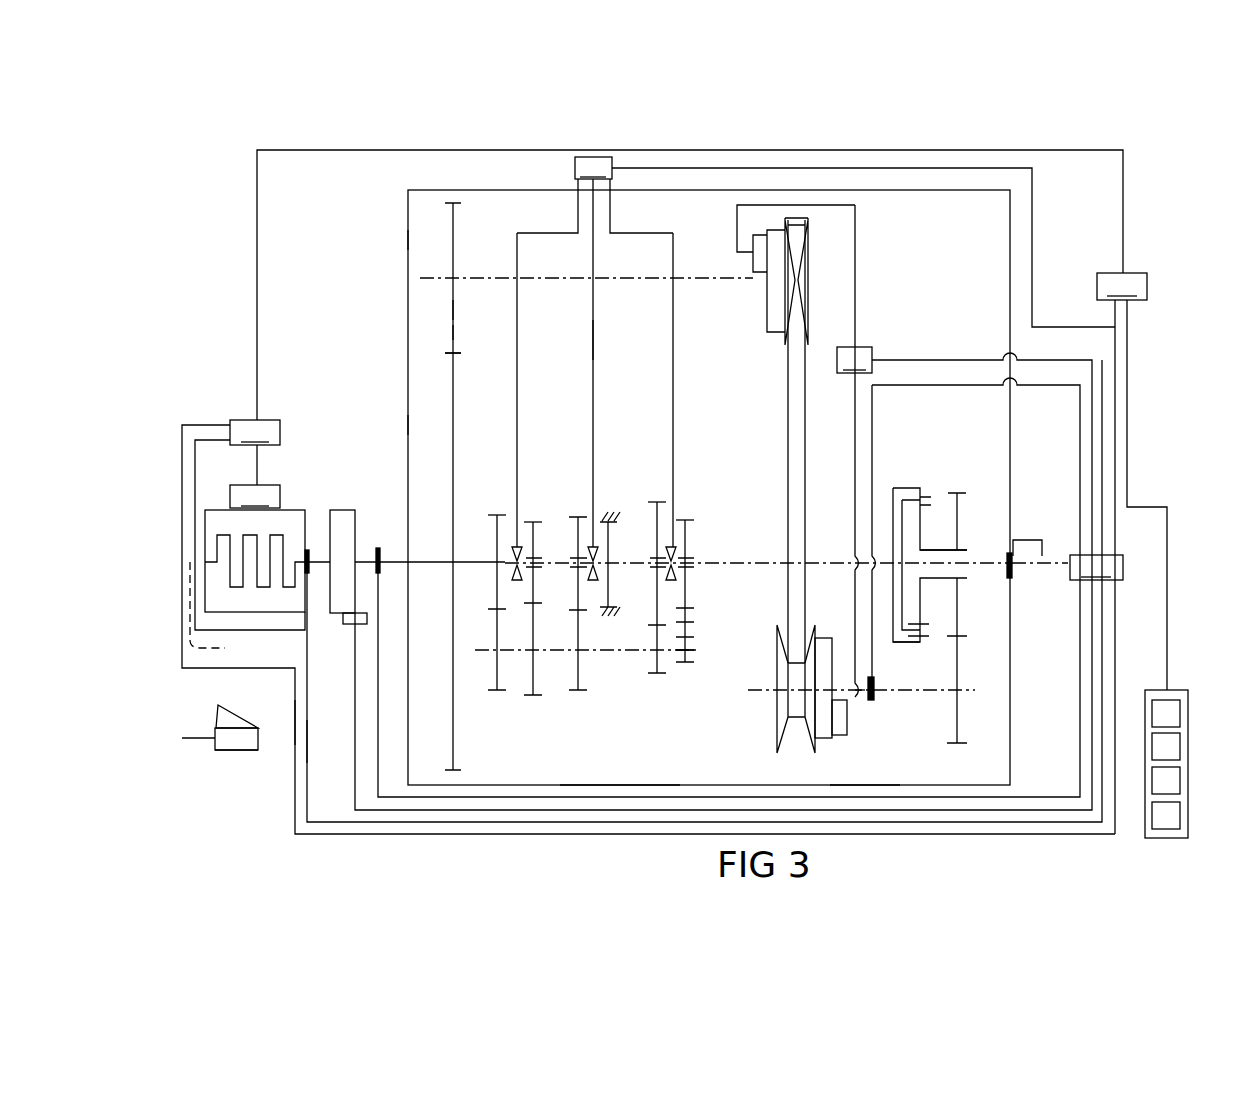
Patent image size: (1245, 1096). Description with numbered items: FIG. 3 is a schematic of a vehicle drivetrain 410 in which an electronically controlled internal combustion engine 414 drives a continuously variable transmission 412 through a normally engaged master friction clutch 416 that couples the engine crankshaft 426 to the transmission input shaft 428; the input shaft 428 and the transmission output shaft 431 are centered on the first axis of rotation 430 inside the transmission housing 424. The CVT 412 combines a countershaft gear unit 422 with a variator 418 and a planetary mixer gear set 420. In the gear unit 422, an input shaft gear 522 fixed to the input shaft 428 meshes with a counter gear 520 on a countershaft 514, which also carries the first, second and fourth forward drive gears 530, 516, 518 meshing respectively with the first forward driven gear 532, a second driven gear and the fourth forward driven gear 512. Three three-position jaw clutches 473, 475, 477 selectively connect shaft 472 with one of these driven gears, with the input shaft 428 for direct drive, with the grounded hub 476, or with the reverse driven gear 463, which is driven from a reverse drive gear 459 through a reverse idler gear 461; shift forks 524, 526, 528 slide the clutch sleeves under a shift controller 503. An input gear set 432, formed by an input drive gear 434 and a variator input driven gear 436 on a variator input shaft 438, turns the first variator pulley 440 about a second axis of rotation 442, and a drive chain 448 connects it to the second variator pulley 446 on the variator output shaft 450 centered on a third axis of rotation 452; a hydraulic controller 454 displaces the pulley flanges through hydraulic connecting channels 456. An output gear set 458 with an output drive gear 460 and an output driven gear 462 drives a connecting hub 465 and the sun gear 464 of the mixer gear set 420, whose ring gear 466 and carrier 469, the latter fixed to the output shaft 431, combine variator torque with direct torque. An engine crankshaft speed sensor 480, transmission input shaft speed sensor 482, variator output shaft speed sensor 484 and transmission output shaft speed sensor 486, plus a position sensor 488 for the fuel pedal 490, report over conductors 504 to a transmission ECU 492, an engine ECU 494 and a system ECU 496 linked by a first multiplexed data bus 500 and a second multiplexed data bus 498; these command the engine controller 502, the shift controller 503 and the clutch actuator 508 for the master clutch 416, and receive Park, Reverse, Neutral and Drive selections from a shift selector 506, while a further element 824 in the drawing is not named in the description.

The vehicle drivetrain 410 is at (1152, 148).
The continuously variable transmission 412 is at (405, 215).
The electronically controlled internal combustion engine 414 is at (218, 506).
The master friction clutch 416 is at (343, 510).
The variator 418 is at (818, 298).
The planetary mixer gear set 420 is at (923, 478).
The countershaft gear unit 422 is at (616, 785).
The transmission housing 424 is at (408, 238).
The engine crankshaft 426 is at (305, 548).
The input shaft 428 is at (453, 585).
The first axis of rotation 430 is at (228, 610).
The transmission output shaft 431 is at (1005, 528).
The input gear set 432 is at (433, 363).
The input drive gear 434 is at (428, 424).
The variator input driven gear 436 is at (453, 330).
The variator input shaft 438 is at (453, 310).
The first variator pulley 440 is at (808, 242).
The second axis of rotation 442 is at (447, 280).
The second variator pulley 446 is at (777, 737).
The drive chain 448 is at (787, 372).
The variator output shaft 450 is at (863, 722).
The third axis of rotation 452 is at (765, 692).
The hydraulic controller 454 is at (723, 578).
The hydraulic connecting channels 456 is at (853, 497).
The output gear set 458 is at (958, 482).
The reverse drive gear 459 is at (694, 659).
The output drive gear 460 is at (958, 710).
The reverse idler gear 461 is at (694, 614).
The output driven gear 462 is at (958, 610).
The reverse driven gear 463 is at (692, 524).
The sun gear 464 is at (922, 603).
The connecting hub 465 is at (940, 548).
The ring gear 466 is at (893, 523).
The carrier 469 is at (905, 500).
The connecting shaft 472 is at (640, 570).
The first-reverse jaw clutch 473 is at (676, 580).
The jaw clutch 475 is at (593, 580).
The grounded hub 476 is at (612, 515).
The jaw clutch 477 is at (516, 580).
The engine crankshaft speed sensor 480 is at (307, 550).
The transmission input shaft speed sensor 482 is at (378, 548).
The variator output shaft speed sensor 484 is at (875, 700).
The transmission output shaft speed sensor 486 is at (1012, 576).
The position sensor 488 is at (225, 750).
The fuel pedal 490 is at (248, 728).
The transmission electronic control unit 492 is at (652, 597).
The engine electronic control unit 494 is at (255, 432).
The system electronic control unit 496 is at (1132, 481).
The second multiplexed data bus 498 is at (1113, 324).
The first multiplexed data bus 500 is at (1060, 155).
The engine controller 502 is at (255, 476).
The shift controller 503 is at (816, 352).
The conductors 504 is at (355, 763).
The shift selector 506 is at (1147, 734).
The clutch actuator 508 is at (336, 622).
The fourth forward driven gear 512 is at (540, 524).
The countershaft 514 is at (603, 652).
The second forward drive gear 516 is at (578, 690).
The fourth forward drive gear 518 is at (533, 695).
The counter gear 520 is at (497, 690).
The input shaft gear 522 is at (497, 512).
The actuating element 524 is at (673, 338).
The actuating element 526 is at (593, 338).
The actuating element 528 is at (518, 325).
The first forward drive gear 530 is at (657, 673).
The first forward driven gear 532 is at (673, 510).
The oil pan 824 is at (862, 785).